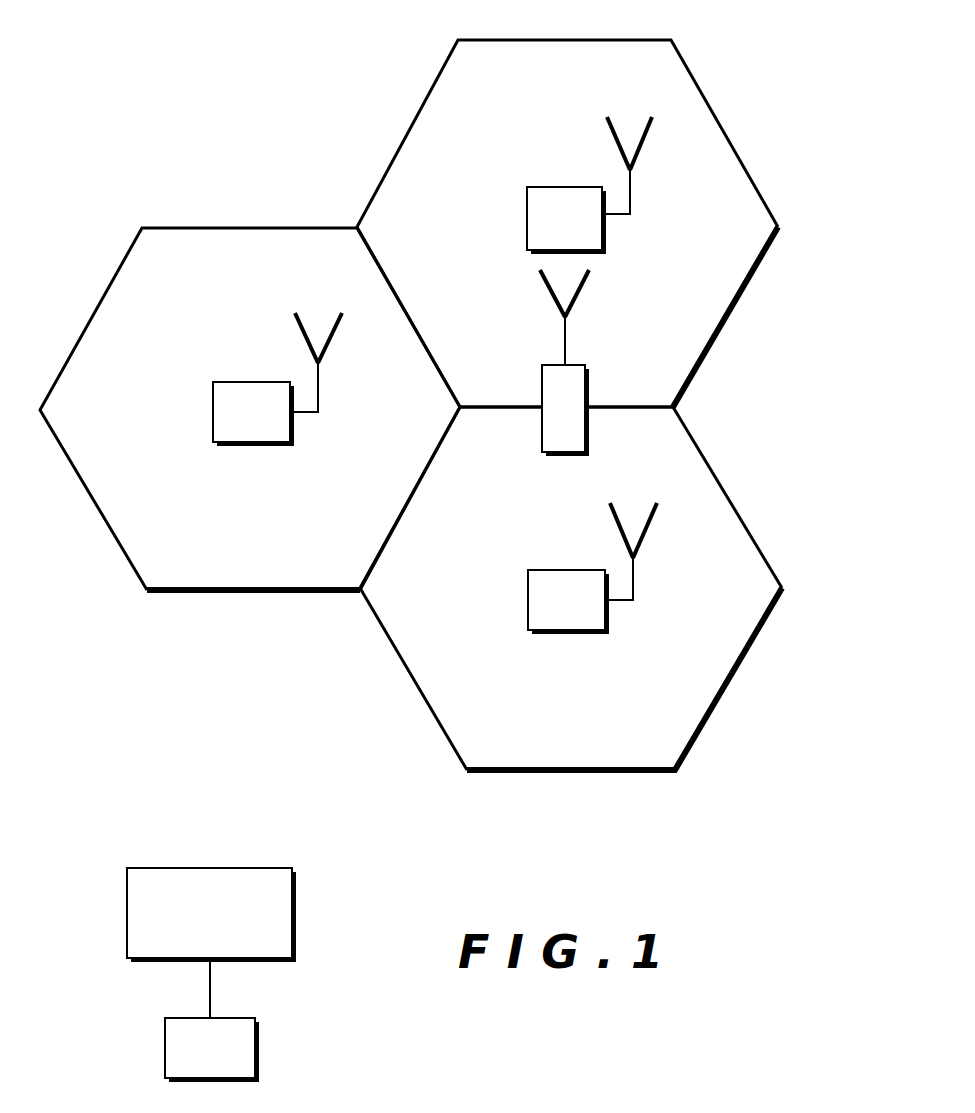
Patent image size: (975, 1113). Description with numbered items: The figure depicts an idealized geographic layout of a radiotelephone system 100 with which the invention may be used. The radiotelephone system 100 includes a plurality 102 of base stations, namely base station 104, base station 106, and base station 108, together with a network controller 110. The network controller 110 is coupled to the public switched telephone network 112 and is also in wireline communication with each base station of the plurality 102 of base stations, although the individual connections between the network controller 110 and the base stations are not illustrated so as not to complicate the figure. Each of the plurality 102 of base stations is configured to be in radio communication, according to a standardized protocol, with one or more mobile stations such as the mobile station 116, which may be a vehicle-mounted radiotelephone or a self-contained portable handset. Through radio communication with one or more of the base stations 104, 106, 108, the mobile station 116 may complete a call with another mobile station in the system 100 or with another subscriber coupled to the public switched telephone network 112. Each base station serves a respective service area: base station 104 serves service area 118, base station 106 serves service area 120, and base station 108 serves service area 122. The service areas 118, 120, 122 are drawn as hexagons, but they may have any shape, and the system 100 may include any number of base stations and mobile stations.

The radiotelephone system 100 is at (78, 692).
The plurality of base stations 102 is at (148, 136).
The base station 104 is at (253, 383).
The base station 106 is at (565, 187).
The base station 108 is at (557, 570).
The network controller 110 is at (270, 868).
The public switched telephone network 112 is at (245, 1018).
The mobile station 116 is at (573, 363).
The service area 118 is at (92, 317).
The service area 120 is at (422, 108).
The service area 122 is at (410, 680).